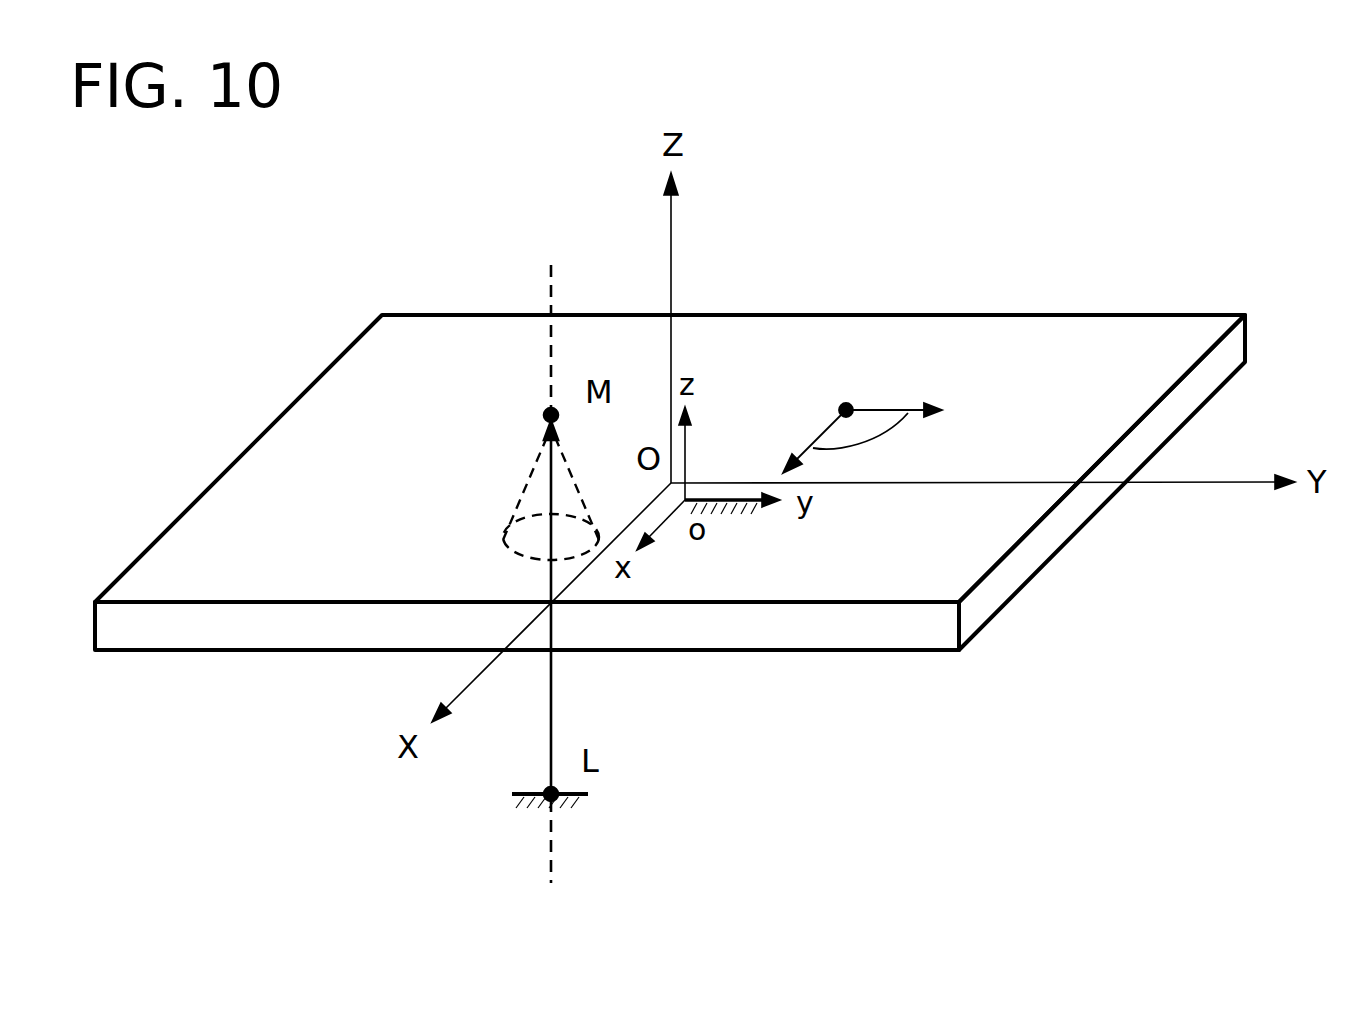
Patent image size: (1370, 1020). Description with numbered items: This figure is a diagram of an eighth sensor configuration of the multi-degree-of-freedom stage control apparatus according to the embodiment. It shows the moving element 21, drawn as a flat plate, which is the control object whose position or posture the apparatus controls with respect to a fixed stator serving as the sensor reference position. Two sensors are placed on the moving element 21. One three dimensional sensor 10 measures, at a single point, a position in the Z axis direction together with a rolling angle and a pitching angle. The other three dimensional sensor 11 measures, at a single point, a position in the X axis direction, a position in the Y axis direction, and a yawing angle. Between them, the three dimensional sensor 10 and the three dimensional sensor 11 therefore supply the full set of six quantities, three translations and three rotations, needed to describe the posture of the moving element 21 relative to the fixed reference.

The three dimensional sensor 10 is at (528, 472).
The three dimensional sensor 11 is at (882, 410).
The moving element 21 is at (865, 625).